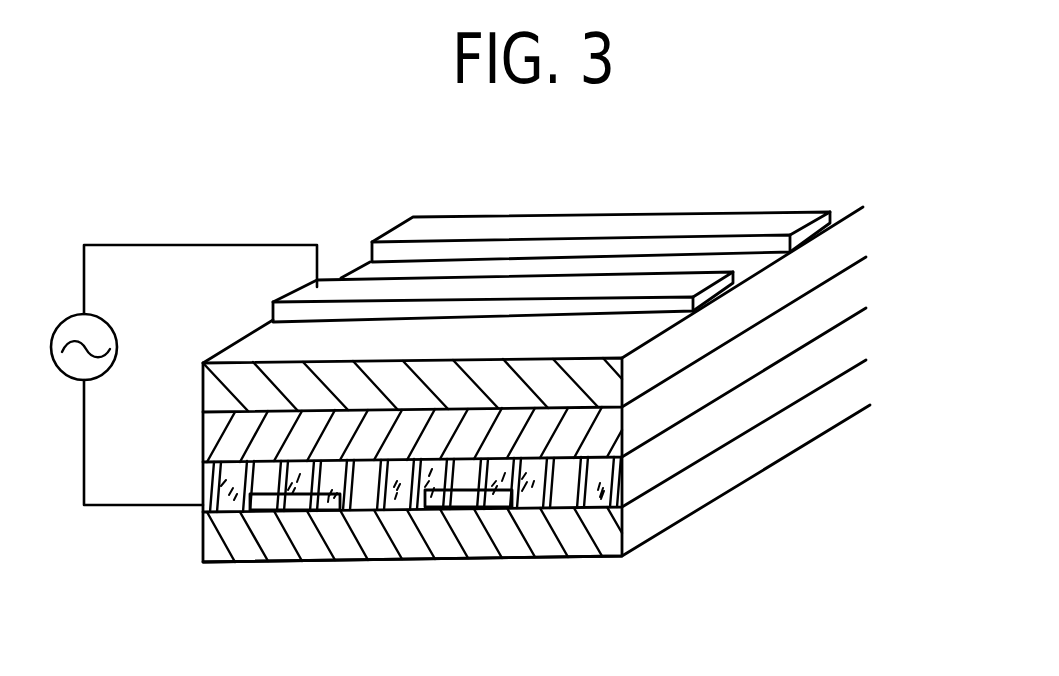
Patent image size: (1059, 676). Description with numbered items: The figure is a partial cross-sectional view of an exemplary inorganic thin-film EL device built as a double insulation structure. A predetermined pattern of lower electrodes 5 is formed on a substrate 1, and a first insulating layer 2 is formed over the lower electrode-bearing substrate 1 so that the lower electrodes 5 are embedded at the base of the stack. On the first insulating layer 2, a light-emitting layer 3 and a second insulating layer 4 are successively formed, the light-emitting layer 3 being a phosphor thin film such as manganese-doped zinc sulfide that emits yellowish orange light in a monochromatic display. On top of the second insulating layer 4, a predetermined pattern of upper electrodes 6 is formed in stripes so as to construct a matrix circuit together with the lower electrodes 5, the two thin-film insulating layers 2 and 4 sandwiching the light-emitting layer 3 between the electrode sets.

The substrate 1 is at (622, 556).
The first insulating layer 2 is at (622, 495).
The light-emitting layer 3 is at (203, 449).
The second insulating layer 4 is at (203, 390).
The lower electrodes 5 is at (283, 511).
The upper electrodes 6 is at (275, 299).